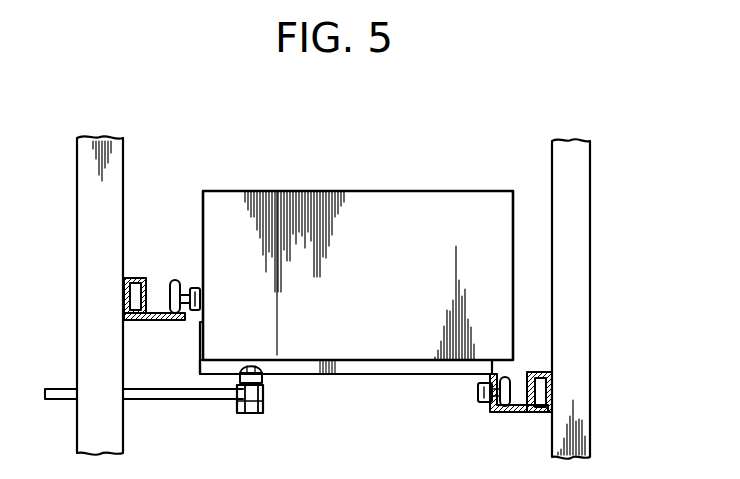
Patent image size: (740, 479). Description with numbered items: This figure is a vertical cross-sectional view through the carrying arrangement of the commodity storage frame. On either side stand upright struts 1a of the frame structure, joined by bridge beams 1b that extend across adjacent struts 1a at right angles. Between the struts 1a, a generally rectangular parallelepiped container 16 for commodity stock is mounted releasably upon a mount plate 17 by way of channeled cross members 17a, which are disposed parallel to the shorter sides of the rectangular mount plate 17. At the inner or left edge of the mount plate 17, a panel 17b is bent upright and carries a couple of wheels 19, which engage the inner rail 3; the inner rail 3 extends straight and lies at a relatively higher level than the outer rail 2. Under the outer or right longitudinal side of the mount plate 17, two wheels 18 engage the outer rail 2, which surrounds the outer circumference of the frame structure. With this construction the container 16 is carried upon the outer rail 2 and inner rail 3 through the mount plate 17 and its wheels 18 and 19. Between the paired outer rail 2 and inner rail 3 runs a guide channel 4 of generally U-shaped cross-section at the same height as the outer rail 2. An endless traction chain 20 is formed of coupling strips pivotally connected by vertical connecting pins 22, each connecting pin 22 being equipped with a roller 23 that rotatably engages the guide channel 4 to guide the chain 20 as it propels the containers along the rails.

The strut 1a is at (77, 213).
The bridge beam 1b is at (135, 278).
The outer rail 2 is at (498, 413).
The inner rail 3 is at (148, 322).
The guide channel 4 is at (258, 415).
The container 16 is at (402, 191).
The mount plate 17 is at (323, 381).
The channeled cross member 17a is at (347, 366).
The panel 17b is at (200, 322).
The wheel 18 is at (503, 402).
The wheel 19 is at (172, 280).
The endless traction chain 20 is at (262, 380).
The connecting pin 22 is at (243, 413).
The roller 23 is at (243, 396).